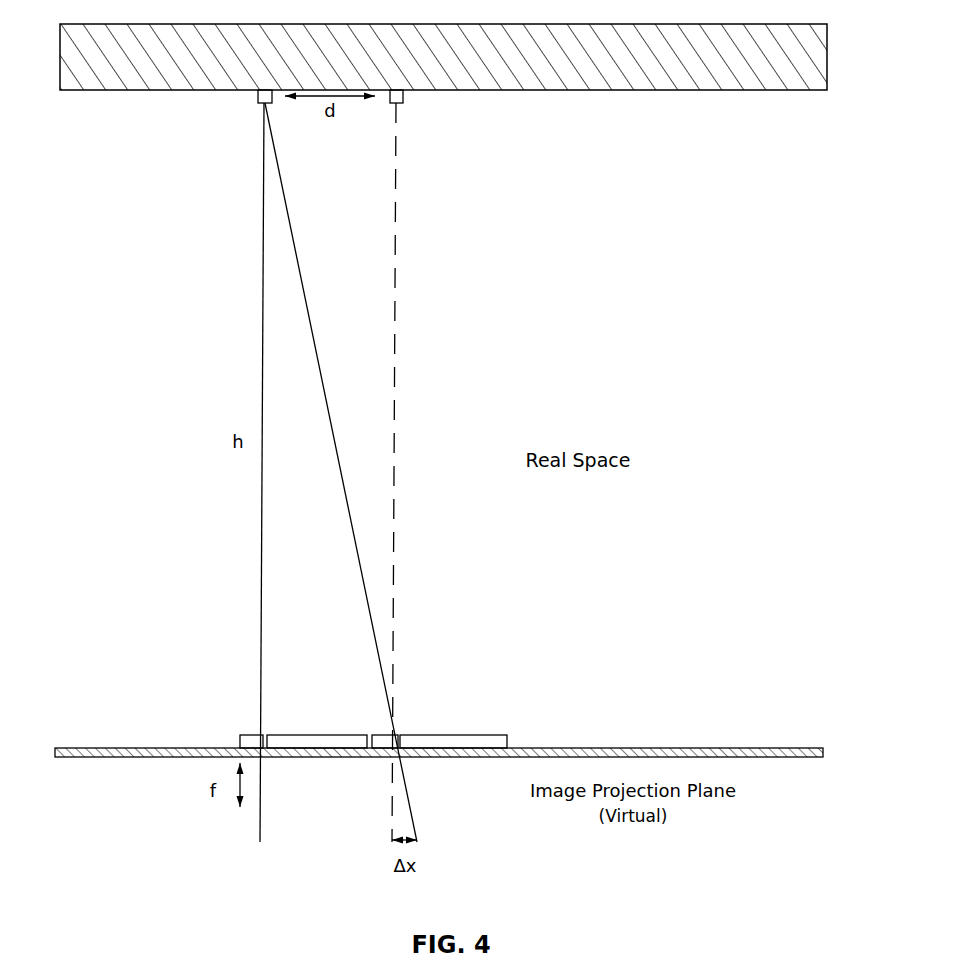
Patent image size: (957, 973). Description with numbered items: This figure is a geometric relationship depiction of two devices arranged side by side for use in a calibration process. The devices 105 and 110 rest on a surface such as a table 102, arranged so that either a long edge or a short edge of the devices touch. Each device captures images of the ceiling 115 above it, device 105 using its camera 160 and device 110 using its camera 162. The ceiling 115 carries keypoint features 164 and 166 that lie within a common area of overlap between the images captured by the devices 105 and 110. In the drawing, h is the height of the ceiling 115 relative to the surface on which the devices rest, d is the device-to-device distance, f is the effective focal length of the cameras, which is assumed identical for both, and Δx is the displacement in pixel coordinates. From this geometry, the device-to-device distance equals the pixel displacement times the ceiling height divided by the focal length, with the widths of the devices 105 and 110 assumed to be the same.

The ceiling 115 is at (728, 124).
The keypoint feature 166 is at (245, 116).
The keypoint feature 164 is at (414, 128).
The camera 162 is at (276, 719).
The device 110 is at (321, 720).
The camera 160 is at (408, 720).
The device 105 is at (490, 719).
The table 102 is at (733, 720).